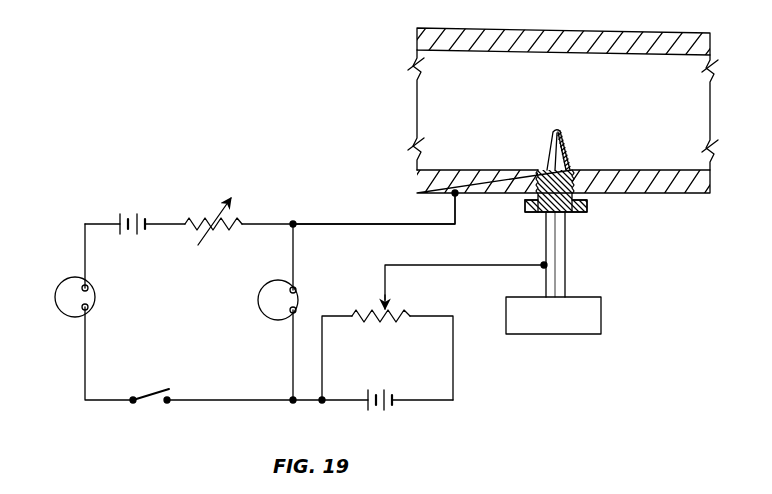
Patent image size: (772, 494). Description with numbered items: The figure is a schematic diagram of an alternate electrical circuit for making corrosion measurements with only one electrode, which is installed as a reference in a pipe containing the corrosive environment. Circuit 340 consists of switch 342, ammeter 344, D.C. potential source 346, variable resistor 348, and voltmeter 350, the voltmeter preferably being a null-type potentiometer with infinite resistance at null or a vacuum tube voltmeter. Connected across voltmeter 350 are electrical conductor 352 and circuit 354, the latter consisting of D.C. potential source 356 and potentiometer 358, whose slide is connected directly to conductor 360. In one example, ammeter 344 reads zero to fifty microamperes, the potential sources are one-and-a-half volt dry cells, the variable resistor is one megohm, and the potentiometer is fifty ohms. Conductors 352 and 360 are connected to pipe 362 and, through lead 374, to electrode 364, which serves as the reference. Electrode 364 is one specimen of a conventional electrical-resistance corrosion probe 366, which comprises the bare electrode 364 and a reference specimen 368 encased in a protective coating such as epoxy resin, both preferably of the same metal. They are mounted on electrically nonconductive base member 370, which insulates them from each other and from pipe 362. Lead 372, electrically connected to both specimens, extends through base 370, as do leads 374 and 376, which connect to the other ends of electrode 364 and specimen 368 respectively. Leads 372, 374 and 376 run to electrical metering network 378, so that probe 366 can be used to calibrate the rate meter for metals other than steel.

The circuit 340 is at (197, 321).
The switch 342 is at (158, 393).
The ammeter 344 is at (60, 309).
The D.C. potential source 346 is at (128, 212).
The variable resistor 348 is at (234, 204).
The voltmeter 350 is at (266, 292).
The electrical conductor 352 is at (385, 222).
The circuit 354 is at (404, 369).
The D.C. potential source 356 is at (380, 417).
The potentiometer 358 is at (403, 312).
The conductor 360 is at (485, 262).
The pipe 362 is at (627, 30).
The electrode 364 is at (548, 152).
The corrosion probe 366 is at (624, 116).
The reference specimen 368 is at (569, 152).
The base member 370 is at (588, 208).
The lead 372 is at (556, 262).
The lead 374 is at (545, 232).
The lead 376 is at (566, 240).
The electrical metering network 378 is at (553, 315).